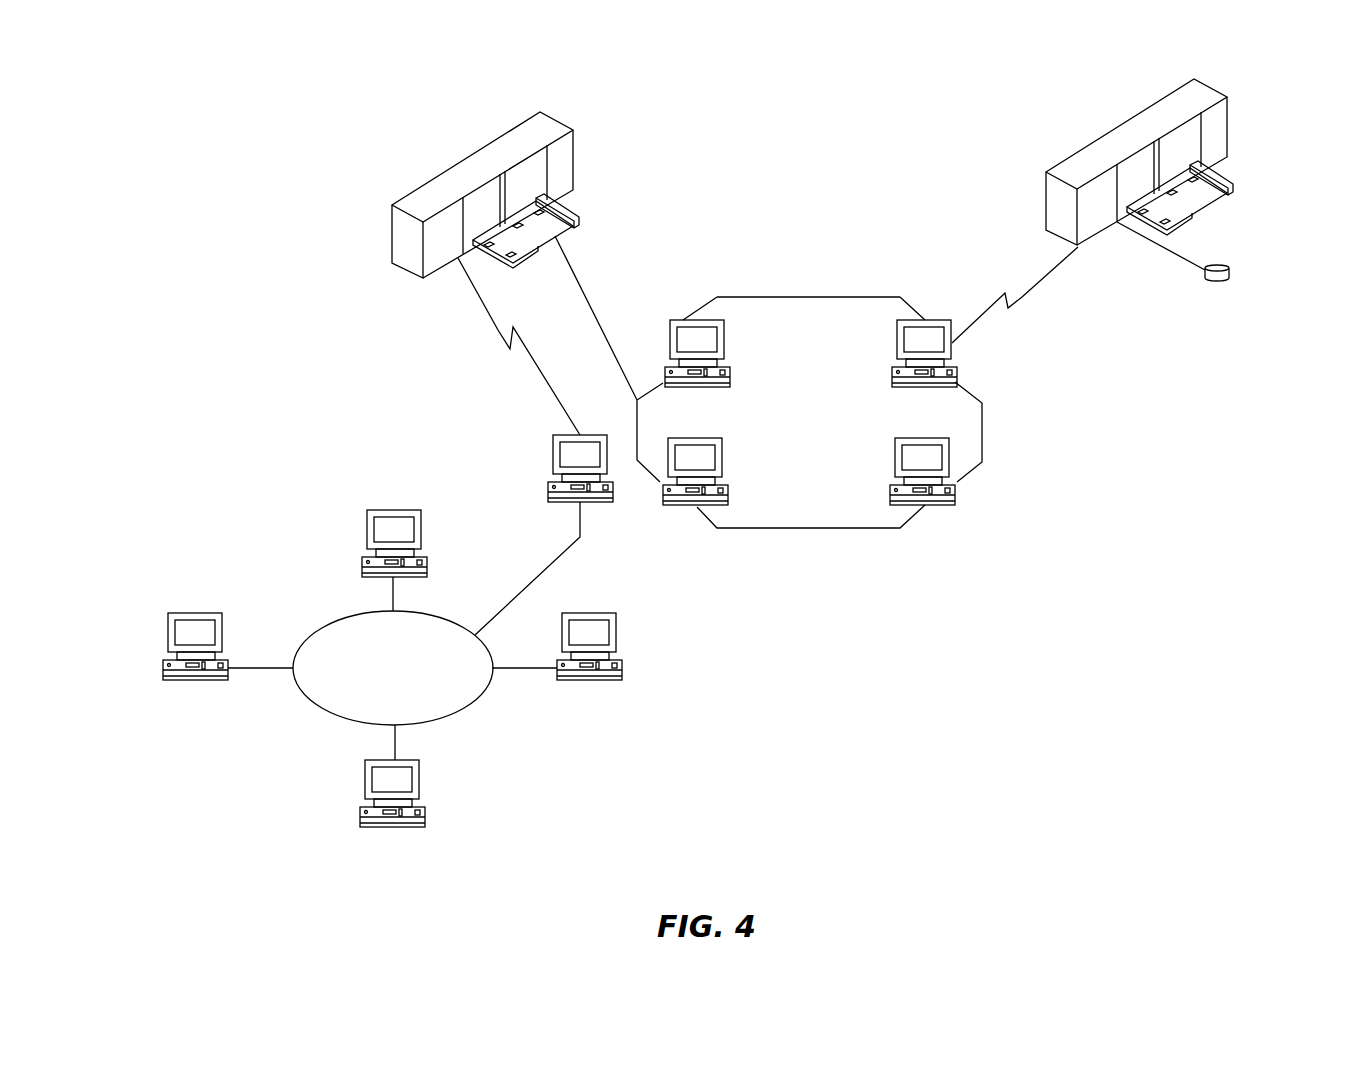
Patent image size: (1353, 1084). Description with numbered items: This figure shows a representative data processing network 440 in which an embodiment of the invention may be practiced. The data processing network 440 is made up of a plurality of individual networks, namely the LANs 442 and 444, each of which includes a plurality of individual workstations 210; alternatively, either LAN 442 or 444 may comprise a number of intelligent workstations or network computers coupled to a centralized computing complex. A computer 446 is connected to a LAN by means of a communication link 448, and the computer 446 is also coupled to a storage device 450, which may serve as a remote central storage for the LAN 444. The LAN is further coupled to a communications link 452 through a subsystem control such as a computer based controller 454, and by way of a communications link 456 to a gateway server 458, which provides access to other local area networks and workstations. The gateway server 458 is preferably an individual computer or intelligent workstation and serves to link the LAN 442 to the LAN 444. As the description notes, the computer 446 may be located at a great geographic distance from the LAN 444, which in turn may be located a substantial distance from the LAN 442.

The workstation 210 is at (683, 322).
The data processing network 440 is at (838, 297).
The LAN 442 is at (450, 713).
The LAN 444 is at (808, 423).
The computer 446 is at (1120, 123).
The communication link 448 is at (1015, 298).
The storage device 450 is at (1223, 267).
The communications link 452 is at (577, 280).
The computer based controller 454 is at (473, 153).
The communications link 456 is at (497, 330).
The gateway server 458 is at (563, 437).